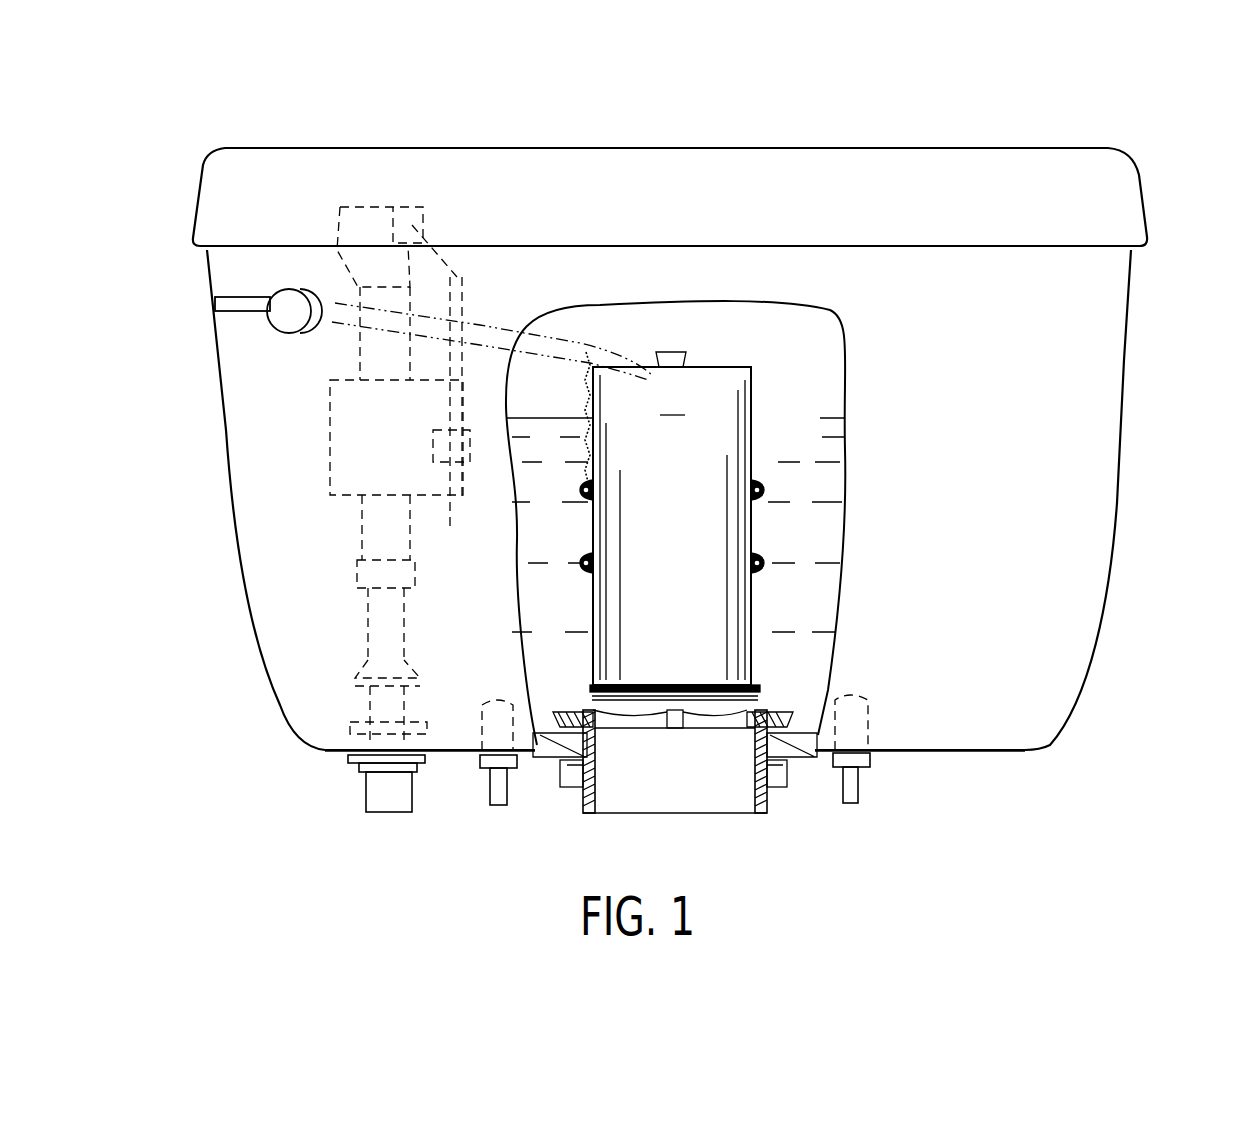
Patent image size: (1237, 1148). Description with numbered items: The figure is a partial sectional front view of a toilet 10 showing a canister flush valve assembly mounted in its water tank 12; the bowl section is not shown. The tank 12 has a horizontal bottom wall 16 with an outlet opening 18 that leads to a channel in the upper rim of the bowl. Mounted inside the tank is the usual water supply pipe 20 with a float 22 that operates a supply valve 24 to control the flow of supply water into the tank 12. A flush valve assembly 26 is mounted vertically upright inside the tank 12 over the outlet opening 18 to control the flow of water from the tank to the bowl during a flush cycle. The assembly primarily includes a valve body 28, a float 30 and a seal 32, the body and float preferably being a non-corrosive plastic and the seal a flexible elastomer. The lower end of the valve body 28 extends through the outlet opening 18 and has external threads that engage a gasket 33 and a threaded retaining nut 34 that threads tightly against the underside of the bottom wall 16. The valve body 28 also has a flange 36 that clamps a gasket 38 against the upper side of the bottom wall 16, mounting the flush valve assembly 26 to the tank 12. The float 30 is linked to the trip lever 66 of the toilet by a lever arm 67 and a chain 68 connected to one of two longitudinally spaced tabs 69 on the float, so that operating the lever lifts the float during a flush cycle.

The toilet 10 is at (888, 115).
The water tank 12 is at (1117, 503).
The bottom wall 16 is at (970, 752).
The outlet opening 18 is at (777, 747).
The water supply pipe 20 is at (360, 530).
The float 22 is at (350, 432).
The supply valve 24 is at (427, 216).
The flush valve assembly 26 is at (797, 363).
The valve body 28 is at (598, 803).
The float 30 is at (732, 592).
The seal 32 is at (758, 690).
The gasket 33 is at (550, 775).
The threaded retaining nut 34 is at (770, 793).
The flange 36 is at (576, 714).
The gasket 38 is at (540, 722).
The trip lever 66 is at (293, 322).
The lever arm 67 is at (482, 323).
The chain 68 is at (580, 398).
The tabs 69 is at (582, 505).